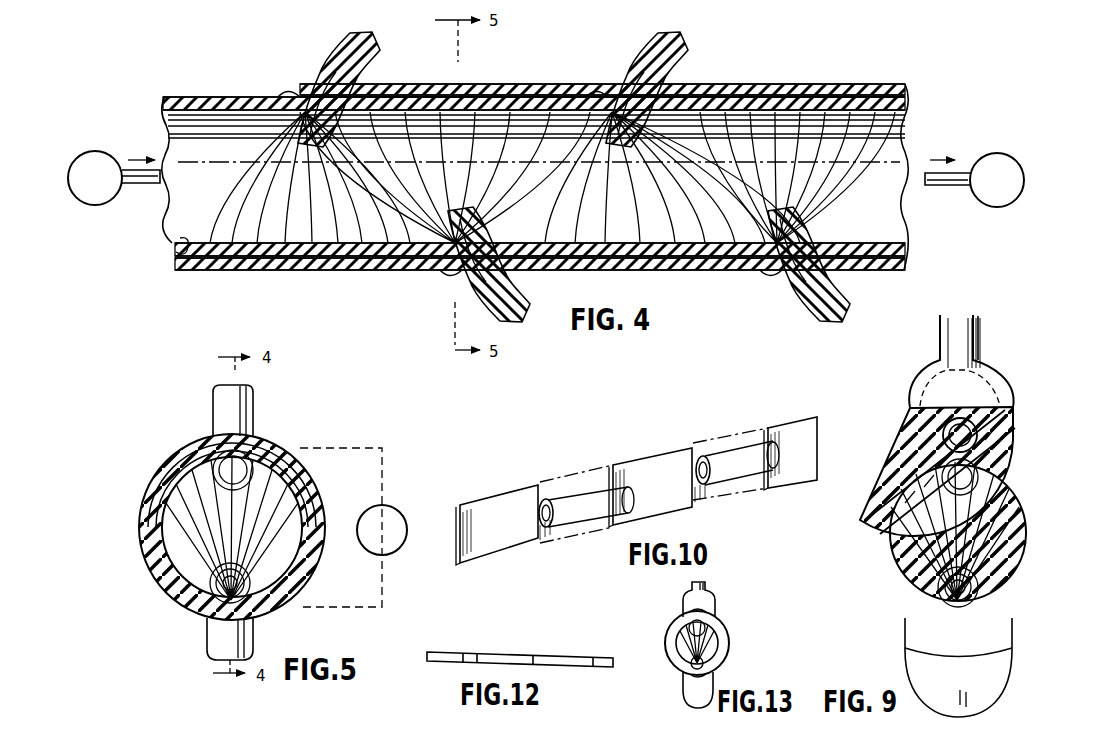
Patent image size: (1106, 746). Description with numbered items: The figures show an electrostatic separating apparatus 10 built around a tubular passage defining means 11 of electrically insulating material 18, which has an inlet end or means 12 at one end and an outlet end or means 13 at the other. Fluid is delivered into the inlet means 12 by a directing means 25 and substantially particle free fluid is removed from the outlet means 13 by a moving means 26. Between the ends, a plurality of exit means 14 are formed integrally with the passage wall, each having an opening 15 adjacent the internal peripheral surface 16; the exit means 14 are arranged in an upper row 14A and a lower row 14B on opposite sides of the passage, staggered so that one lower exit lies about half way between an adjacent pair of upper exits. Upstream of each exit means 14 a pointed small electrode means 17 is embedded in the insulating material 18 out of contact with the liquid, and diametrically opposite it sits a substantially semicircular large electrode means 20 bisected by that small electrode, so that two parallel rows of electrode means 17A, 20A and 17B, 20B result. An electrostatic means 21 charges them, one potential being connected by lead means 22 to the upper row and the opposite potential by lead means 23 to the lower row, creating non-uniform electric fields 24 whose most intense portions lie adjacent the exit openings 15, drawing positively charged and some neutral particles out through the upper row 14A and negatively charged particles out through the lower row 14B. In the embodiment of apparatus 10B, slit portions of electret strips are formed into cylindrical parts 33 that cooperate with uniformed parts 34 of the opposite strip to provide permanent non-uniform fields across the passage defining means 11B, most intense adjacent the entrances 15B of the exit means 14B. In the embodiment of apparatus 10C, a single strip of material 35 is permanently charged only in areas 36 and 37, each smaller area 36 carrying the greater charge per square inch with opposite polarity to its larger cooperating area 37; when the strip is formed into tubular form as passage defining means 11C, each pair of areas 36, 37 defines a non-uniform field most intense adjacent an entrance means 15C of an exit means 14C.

In FIG. 4, the improved method and apparatus 10 is at (776, 50).
In FIG. 5, the improved method and apparatus 10 is at (332, 410).
In FIG. 9, the method and apparatus of another embodiment 10B is at (1025, 430).
In FIG. 13, the method and apparatus of another embodiment 10C is at (735, 600).
In FIG. 4, the tubular passage defining means 11 is at (532, 166).
In FIG. 5, the tubular passage defining means 11 is at (314, 484).
In FIG. 9, the passage defining means 11B is at (866, 520).
In FIG. 13, the passage defining means 11C is at (728, 643).
In FIG. 4, the inlet end or means 12 is at (130, 185).
In FIG. 4, the outlet end or means 13 is at (957, 188).
In FIG. 4, the exit means 14 is at (378, 50).
In FIG. 5, the exit means 14 is at (242, 398).
In FIG. 4, the upper row of exit means 14A is at (208, 50).
In FIG. 4, the lower row of exit means 14B is at (208, 300).
In FIG. 9, the lower row of exit means 14B is at (970, 342).
In FIG. 13, the exit means 14C is at (690, 592).
In FIG. 4, the opening 15 is at (306, 125).
In FIG. 5, the opening 15 is at (243, 465).
In FIG. 9, the entrance 15B is at (967, 473).
In FIG. 13, the entrance means 15C is at (690, 622).
In FIG. 4, the internal peripheral surface 16 is at (182, 248).
In FIG. 4, the small electrode means 17 is at (305, 100).
In FIG. 4, the upper row of electrode means 17A is at (125, 98).
In FIG. 4, the lower row of electrode means 17B is at (130, 256).
In FIG. 4, the electrical insulating material 18 is at (216, 98).
In FIG. 4, the large electrode means 20 is at (498, 92).
In FIG. 4, the upper row of electrode means 20A is at (65, 98).
In FIG. 4, the lower row of electrode means 20B is at (69, 256).
In FIG. 5, the electrostatic means 21 is at (378, 510).
In FIG. 5, the lead means 22 is at (338, 448).
In FIG. 5, the lead means 23 is at (318, 608).
In FIG. 4, the non-uniform electric field 24 is at (524, 175).
In FIG. 5, the non-uniform electric field 24 is at (176, 600).
In FIG. 4, the directing means 25 is at (82, 163).
In FIG. 4, the moving means 26 is at (1000, 165).
In FIG. 10, the cylindrical parts 33 is at (575, 498).
In FIG. 9, the cylindrical parts 33 is at (937, 423).
In FIG. 10, the uniformed parts 34 is at (497, 507).
In FIG. 9, the uniformed parts 34 is at (1007, 613).
In FIG. 12, the single strip of material 35 is at (612, 660).
In FIG. 12, the charged area 36 is at (478, 656).
In FIG. 13, the charged area 36 is at (710, 615).
In FIG. 12, the charged area 37 is at (582, 660).
In FIG. 13, the charged area 37 is at (712, 668).